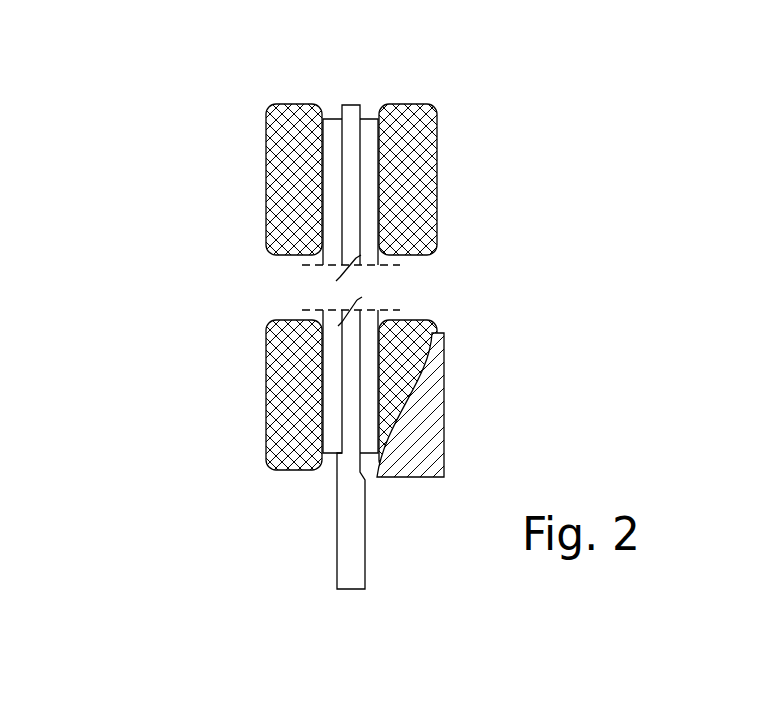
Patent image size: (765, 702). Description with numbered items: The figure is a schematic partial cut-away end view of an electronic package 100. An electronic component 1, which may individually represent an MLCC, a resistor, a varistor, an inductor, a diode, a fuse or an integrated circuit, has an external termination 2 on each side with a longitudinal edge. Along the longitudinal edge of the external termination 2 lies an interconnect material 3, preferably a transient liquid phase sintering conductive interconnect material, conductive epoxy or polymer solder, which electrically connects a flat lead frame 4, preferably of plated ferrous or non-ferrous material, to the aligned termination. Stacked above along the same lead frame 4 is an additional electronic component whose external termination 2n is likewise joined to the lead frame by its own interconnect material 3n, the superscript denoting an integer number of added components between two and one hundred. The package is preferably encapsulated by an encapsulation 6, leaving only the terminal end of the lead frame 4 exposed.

The electronic package 100 is at (208, 135).
The electronic component 1 is at (241, 381).
The external termination 2 is at (282, 442).
The external termination of additional electronic component 2n is at (488, 227).
The interconnect material 3 is at (370, 440).
The interconnect material of additional electronic component 3n is at (328, 140).
The flat lead frame 4 is at (352, 116).
The encapsulation 6 is at (428, 405).